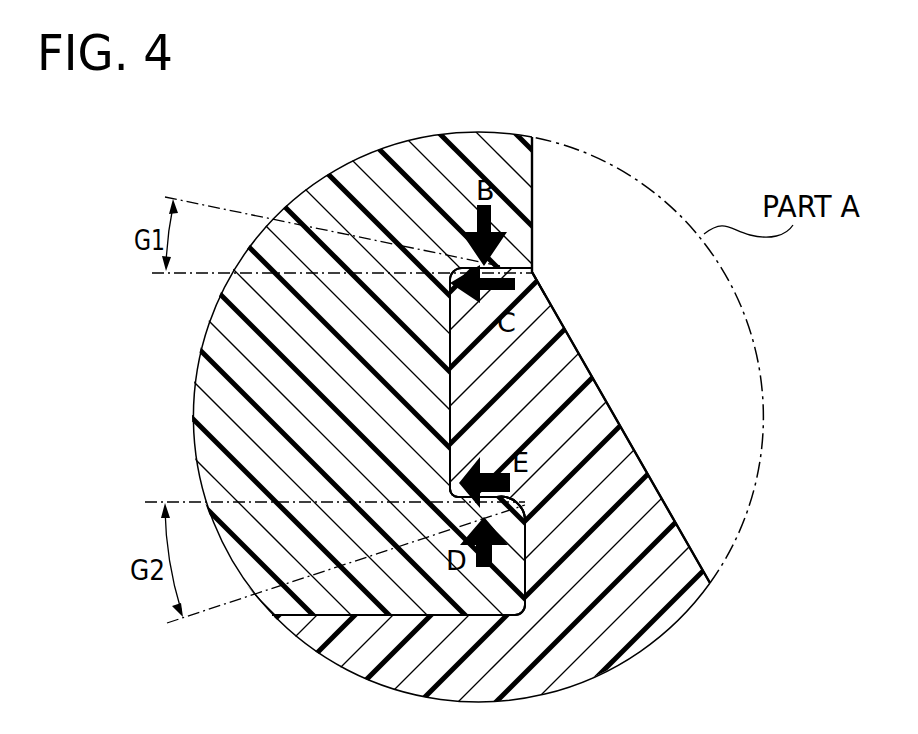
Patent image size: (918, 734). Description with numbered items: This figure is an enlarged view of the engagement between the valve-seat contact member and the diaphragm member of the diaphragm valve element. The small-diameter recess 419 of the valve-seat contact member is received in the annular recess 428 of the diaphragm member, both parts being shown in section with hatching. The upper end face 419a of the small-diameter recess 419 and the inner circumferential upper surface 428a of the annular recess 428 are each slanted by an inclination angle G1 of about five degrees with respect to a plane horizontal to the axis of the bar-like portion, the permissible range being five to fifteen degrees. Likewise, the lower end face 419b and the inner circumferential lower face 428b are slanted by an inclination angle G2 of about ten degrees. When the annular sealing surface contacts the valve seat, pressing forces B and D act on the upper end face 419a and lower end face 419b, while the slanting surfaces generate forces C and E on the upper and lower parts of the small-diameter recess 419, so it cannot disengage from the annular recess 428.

The small-diameter recess 419 is at (447, 468).
The upper end face 419a is at (456, 264).
The lower end face 419b is at (527, 540).
The annular recess 428 is at (466, 412).
The inner circumferential upper surface 428a is at (533, 277).
The inner circumferential lower face 428b is at (514, 488).